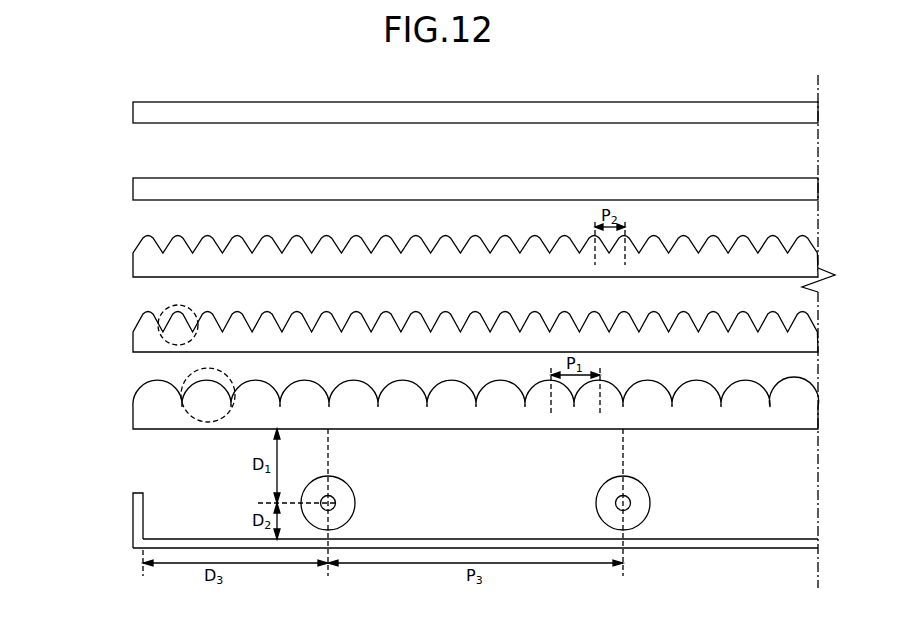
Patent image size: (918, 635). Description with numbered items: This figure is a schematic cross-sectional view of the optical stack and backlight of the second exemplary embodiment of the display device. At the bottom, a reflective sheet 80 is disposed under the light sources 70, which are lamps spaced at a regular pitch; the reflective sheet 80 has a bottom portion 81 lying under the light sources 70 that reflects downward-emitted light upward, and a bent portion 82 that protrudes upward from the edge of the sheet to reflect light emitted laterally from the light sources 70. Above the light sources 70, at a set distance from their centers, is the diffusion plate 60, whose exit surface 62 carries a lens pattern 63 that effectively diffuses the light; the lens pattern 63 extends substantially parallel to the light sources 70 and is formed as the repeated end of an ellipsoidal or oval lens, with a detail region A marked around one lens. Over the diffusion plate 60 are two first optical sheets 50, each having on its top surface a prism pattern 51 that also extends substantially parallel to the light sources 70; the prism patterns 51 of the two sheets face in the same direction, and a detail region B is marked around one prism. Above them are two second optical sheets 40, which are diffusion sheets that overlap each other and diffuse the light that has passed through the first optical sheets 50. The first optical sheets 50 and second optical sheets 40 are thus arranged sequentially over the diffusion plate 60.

The second optical sheets 40 is at (835, 102).
The first optical sheets 50 is at (479, 277).
The prism pattern 51 is at (147, 325).
The diffusion plate 60 is at (456, 385).
The exit surface 62 is at (108, 373).
The lens pattern 63 is at (148, 398).
The light sources 70 is at (640, 511).
The reflective sheet 80 is at (431, 530).
The bottom portion 81 is at (141, 547).
The bent portions 82 is at (137, 523).
The enlarged region A is at (188, 418).
The enlarged region B is at (165, 337).